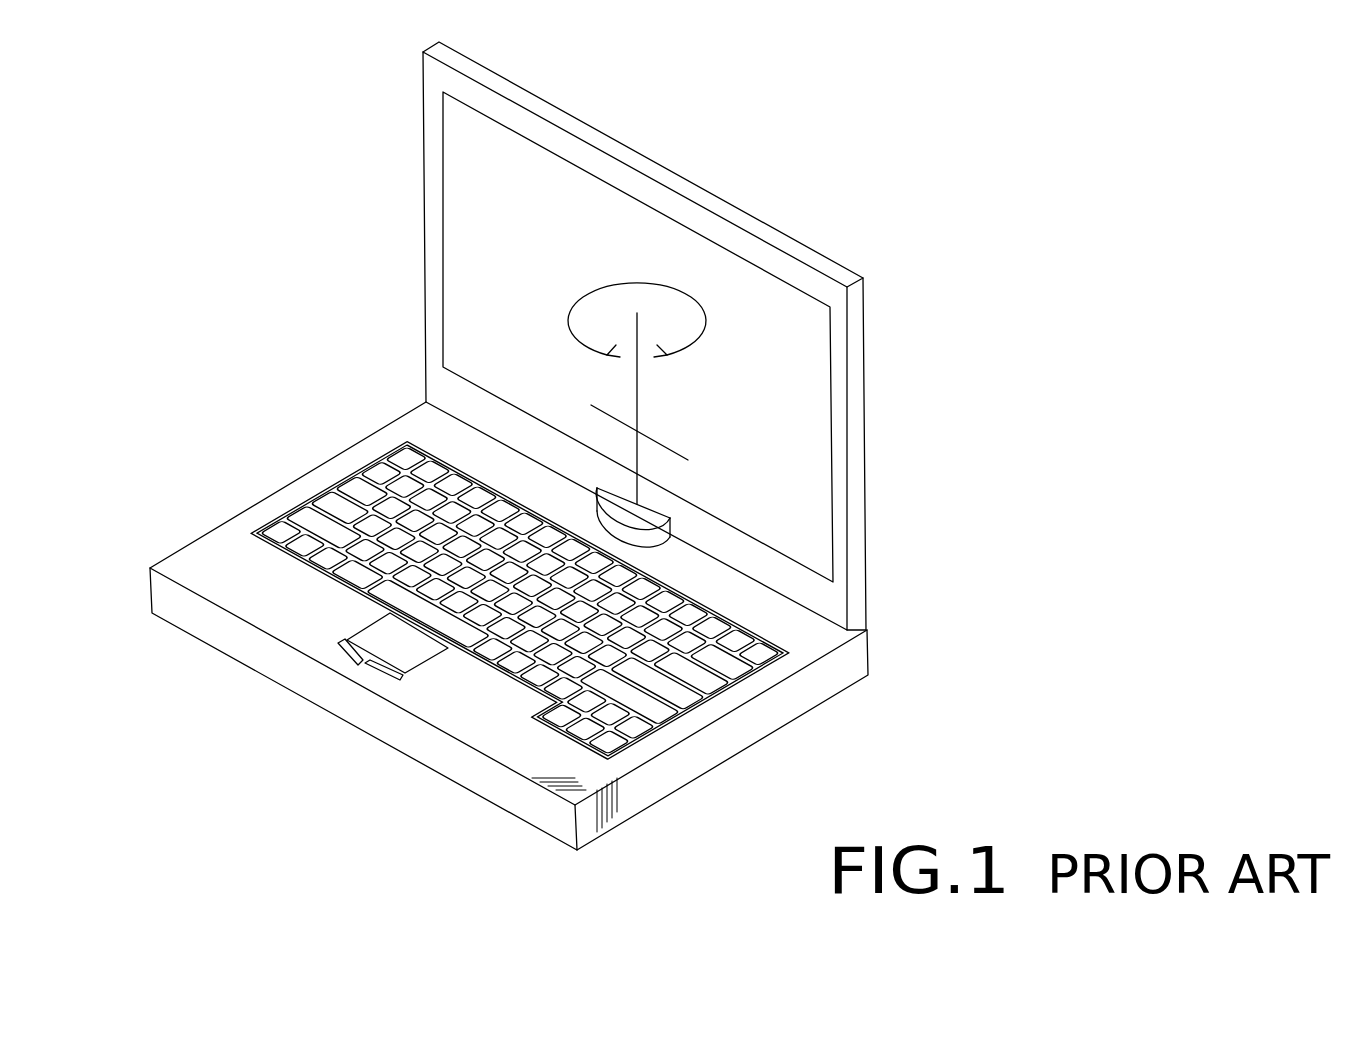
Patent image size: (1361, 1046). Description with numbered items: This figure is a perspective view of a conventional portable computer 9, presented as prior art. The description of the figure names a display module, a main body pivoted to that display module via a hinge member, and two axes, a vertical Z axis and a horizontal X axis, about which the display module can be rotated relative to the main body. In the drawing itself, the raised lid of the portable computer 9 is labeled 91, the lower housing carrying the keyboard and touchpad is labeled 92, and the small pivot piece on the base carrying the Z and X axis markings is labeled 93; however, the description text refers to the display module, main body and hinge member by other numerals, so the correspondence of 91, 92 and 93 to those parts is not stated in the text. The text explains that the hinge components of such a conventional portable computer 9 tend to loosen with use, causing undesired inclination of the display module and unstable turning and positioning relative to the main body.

The portable computer 9 is at (377, 342).
The display lid 91 is at (878, 457).
The main body (base) 92 is at (787, 738).
The gyroscopic pointing sensor 93 is at (648, 537).